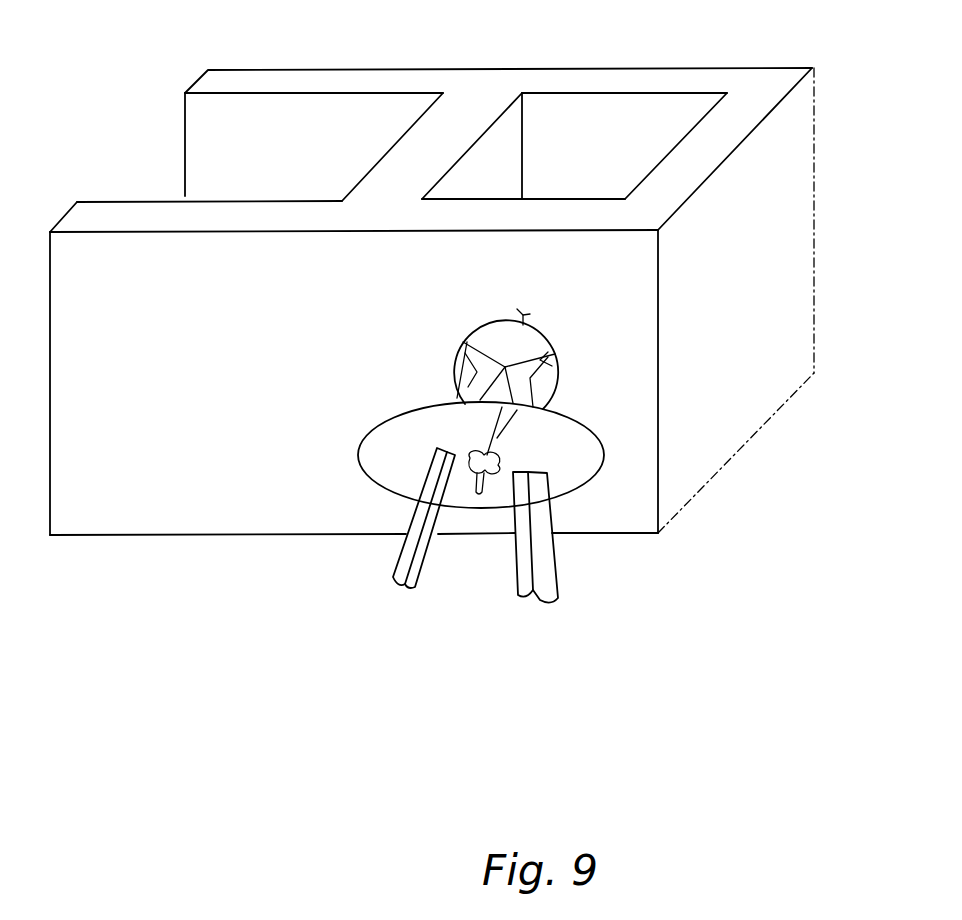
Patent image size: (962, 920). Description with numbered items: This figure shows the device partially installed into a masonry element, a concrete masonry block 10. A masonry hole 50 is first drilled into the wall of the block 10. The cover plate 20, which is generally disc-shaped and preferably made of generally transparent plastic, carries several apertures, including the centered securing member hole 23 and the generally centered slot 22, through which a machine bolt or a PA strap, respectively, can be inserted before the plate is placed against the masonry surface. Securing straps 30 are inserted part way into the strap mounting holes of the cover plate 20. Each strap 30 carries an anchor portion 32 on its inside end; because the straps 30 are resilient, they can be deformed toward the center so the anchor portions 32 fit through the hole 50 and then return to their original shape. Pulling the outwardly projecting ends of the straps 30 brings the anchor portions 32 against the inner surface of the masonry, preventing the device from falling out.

The masonry block 10 is at (194, 82).
The masonry hole 50 is at (525, 320).
The anchor portion 32 is at (541, 359).
The slot 22 is at (497, 438).
The securing member hole 23 is at (503, 460).
The cover plate 20 is at (613, 452).
The securing strap 30 is at (560, 568).